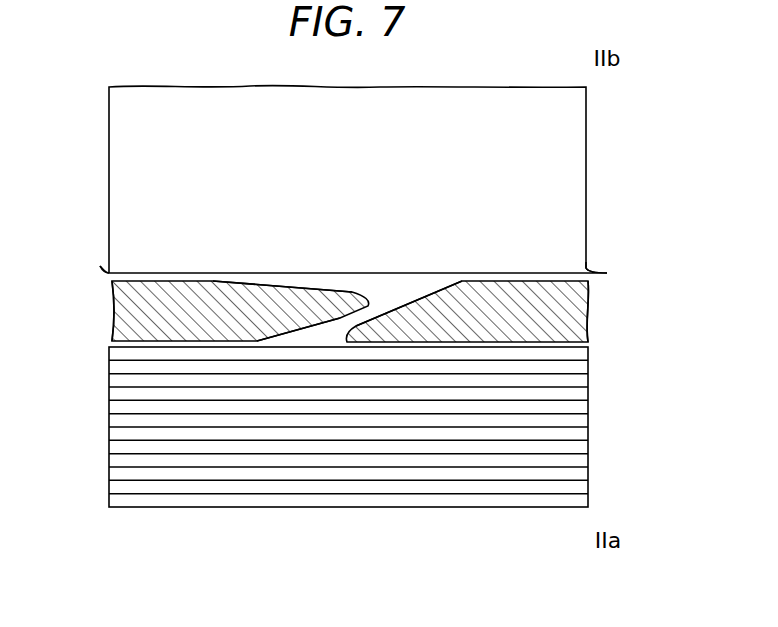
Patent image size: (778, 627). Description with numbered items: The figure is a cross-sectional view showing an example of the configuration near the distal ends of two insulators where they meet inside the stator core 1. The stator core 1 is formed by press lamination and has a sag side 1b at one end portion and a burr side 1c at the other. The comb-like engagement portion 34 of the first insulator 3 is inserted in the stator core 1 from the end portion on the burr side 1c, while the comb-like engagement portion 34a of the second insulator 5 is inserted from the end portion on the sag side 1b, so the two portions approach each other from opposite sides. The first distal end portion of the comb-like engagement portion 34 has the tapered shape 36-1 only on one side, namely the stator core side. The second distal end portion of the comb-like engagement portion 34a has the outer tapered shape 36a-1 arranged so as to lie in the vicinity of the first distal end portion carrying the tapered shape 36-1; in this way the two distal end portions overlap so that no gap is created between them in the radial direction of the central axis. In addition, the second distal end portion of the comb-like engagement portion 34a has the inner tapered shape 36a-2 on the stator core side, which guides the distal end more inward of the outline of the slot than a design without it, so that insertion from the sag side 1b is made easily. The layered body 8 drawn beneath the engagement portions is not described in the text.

The stator core 1 is at (586, 112).
The sag side 1b is at (100, 266).
The burr side 1c is at (596, 271).
The first insulator 3 is at (612, 315).
The second insulator 5 is at (90, 316).
The laminated layer 8 is at (403, 445).
The comb-like engagement portion 34 is at (510, 313).
The comb-like engagement portion 34a is at (200, 327).
The tapered shape 36-1 is at (419, 298).
The outer tapered shape 36a-1 is at (311, 328).
The inner tapered shape 36a-2 is at (323, 290).